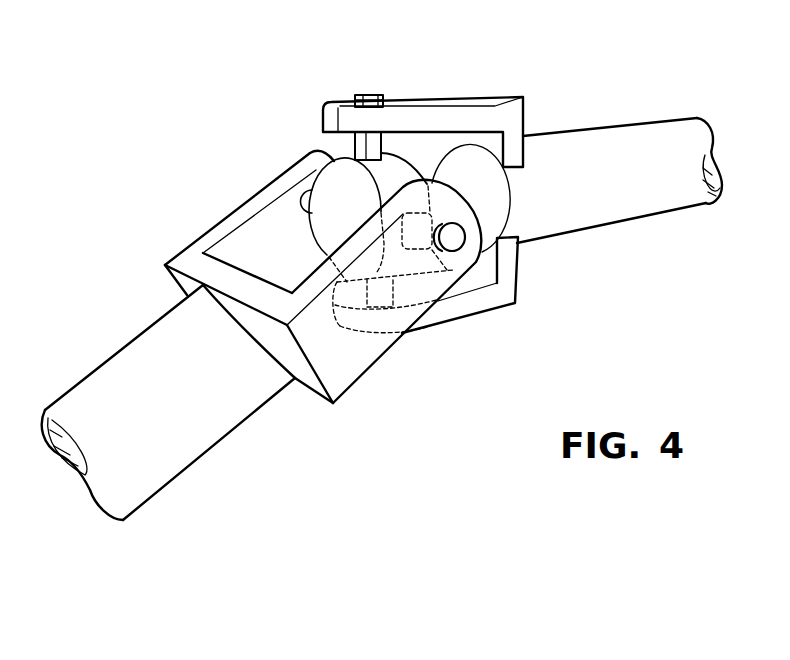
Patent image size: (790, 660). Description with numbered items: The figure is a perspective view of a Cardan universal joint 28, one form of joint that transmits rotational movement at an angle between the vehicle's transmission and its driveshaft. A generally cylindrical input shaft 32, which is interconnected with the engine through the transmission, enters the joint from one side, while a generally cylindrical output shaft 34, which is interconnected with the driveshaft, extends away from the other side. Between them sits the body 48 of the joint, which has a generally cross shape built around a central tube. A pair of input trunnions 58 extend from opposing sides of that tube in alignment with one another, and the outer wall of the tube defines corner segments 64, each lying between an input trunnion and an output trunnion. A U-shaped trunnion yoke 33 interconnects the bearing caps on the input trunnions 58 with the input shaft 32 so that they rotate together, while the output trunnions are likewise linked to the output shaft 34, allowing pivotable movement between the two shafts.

The Cardan universal joint 28 is at (366, 381).
The input shaft 32 is at (190, 437).
The U-shaped trunnion yoke 33 is at (502, 108).
The output shaft 34 is at (633, 147).
The body 48 is at (334, 157).
The input trunnions 58 is at (383, 148).
The corner segments 64 is at (408, 175).